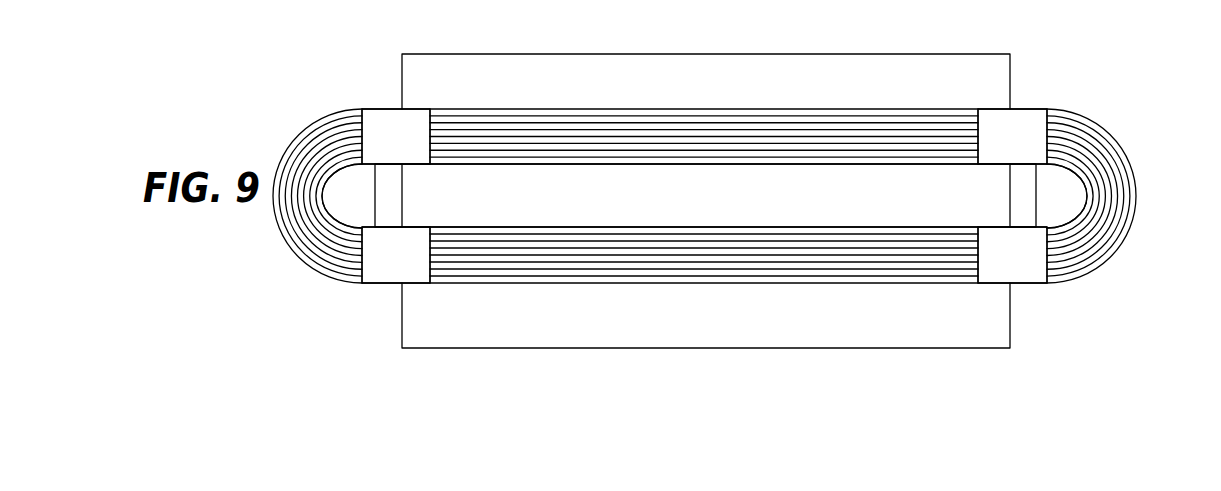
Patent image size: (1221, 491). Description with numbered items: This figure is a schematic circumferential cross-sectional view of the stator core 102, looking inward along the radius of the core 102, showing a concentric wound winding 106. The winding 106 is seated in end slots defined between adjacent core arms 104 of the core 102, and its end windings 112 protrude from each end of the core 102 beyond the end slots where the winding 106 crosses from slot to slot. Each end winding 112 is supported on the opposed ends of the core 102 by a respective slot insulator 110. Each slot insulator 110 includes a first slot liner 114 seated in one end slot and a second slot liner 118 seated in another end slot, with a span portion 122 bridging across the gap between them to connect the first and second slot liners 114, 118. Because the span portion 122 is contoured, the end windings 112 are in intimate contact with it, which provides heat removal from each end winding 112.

The stator core 102 is at (331, 46).
The core arm 104 is at (467, 77).
The winding 106 is at (835, 140).
The slot insulator 110 is at (1024, 133).
The end winding 112 is at (302, 167).
The first slot liner 114 is at (382, 132).
The second slot liner 118 is at (1028, 278).
The span portion 122 is at (357, 200).